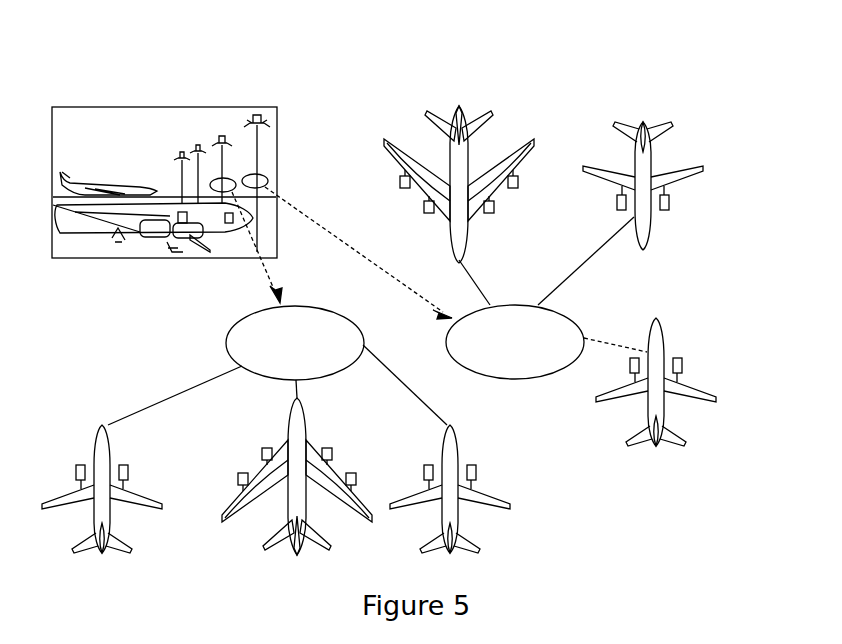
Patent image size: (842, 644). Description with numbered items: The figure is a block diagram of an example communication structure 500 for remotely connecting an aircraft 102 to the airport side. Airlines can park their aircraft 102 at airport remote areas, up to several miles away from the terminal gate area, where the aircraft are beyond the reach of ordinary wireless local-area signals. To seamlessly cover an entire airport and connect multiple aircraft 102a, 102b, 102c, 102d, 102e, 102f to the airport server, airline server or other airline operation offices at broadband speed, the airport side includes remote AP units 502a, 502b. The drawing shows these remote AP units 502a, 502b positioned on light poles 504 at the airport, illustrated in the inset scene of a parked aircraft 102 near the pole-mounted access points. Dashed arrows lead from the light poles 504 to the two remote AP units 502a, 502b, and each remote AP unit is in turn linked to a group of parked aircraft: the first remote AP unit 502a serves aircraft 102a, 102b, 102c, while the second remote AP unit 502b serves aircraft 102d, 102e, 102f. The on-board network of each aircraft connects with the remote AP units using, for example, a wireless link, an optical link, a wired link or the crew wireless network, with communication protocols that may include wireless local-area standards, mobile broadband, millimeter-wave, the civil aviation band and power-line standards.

The communication structure 500 is at (635, 62).
The light poles 504 is at (257, 153).
The aircraft 102 is at (128, 178).
The remote AP unit 502a is at (228, 345).
The remote AP unit 502b is at (582, 322).
The aircraft 102a is at (128, 482).
The aircraft 102b is at (345, 475).
The aircraft 102c is at (483, 483).
The aircraft 102d is at (478, 170).
The aircraft 102e is at (660, 172).
The aircraft 102f is at (668, 347).